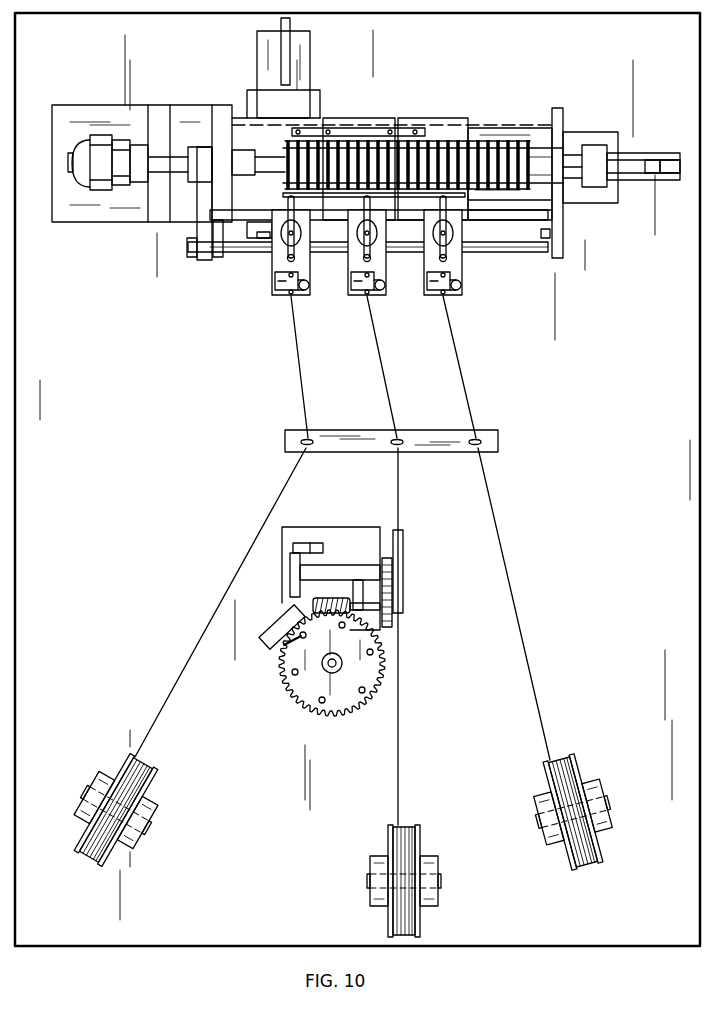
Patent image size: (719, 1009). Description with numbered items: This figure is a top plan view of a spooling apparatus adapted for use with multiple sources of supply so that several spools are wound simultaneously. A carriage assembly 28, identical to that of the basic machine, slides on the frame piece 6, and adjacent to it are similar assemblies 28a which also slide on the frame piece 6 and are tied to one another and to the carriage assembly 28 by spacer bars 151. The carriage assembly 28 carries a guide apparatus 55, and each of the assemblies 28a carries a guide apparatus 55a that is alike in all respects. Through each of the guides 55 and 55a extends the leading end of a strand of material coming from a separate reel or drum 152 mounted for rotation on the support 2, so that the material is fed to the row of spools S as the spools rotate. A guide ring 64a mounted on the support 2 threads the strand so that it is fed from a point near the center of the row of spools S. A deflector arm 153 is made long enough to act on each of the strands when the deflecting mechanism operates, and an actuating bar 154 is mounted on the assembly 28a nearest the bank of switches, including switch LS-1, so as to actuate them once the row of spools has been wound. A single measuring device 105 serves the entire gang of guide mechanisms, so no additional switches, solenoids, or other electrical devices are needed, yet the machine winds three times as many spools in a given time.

The support 2 is at (90, 938).
The row of spools S is at (283, 157).
The frame piece 6 is at (500, 132).
The carriage assembly 28 is at (268, 271).
The similar assemblies 28a is at (379, 112).
The guide apparatus 55 is at (315, 294).
The guide apparatus 55a is at (430, 298).
The guide ring 64a is at (392, 438).
The measuring device 105 is at (353, 526).
The spacer bars 151 is at (340, 128).
The reel or drum 152 is at (148, 780).
The deflector arm 153 is at (341, 201).
The actuating bar 154 is at (466, 232).
The switch LS-1 is at (547, 238).